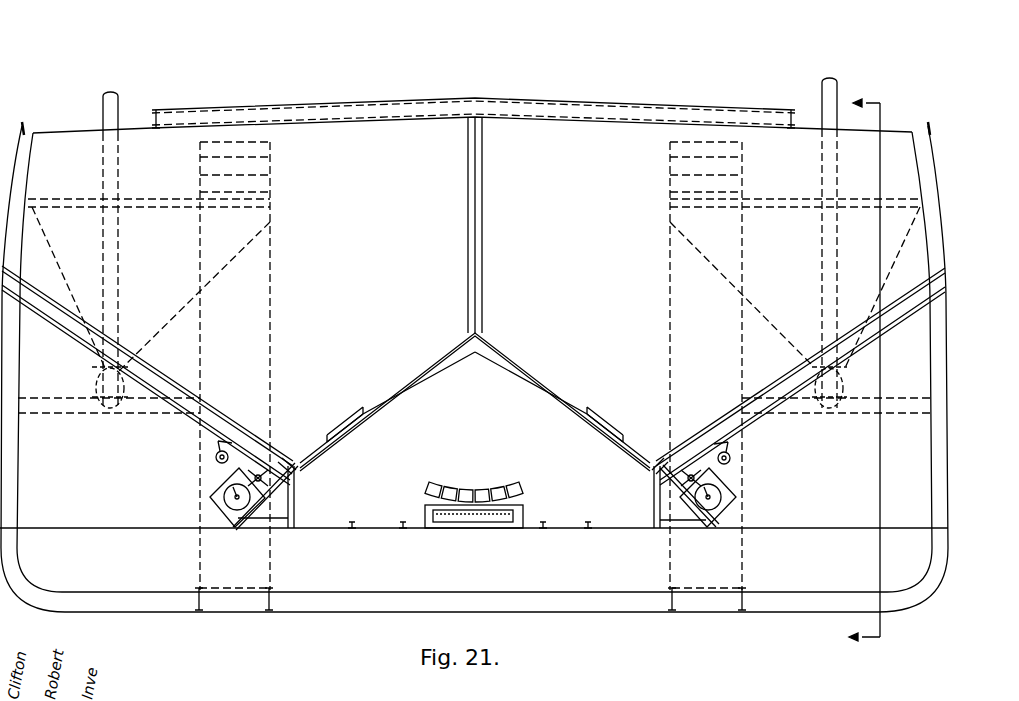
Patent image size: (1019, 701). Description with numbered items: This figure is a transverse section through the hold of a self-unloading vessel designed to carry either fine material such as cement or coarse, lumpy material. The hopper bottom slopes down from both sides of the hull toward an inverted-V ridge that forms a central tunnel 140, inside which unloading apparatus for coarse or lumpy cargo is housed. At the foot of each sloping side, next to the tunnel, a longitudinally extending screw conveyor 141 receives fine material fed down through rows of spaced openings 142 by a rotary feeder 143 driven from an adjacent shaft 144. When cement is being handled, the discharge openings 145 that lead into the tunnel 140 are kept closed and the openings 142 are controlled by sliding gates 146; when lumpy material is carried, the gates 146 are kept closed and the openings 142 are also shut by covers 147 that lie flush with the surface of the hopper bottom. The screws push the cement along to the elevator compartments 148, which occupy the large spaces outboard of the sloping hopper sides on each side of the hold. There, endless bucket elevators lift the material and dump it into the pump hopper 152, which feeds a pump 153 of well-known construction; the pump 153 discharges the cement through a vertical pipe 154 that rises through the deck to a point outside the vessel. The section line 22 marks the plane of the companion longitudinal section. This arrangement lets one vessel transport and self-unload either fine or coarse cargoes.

The section line 22- 22 is at (877, 377).
The central tunnel 140 is at (498, 388).
The screw conveyor 141 is at (722, 492).
The openings 142 is at (675, 455).
The rotary feeder 143 is at (673, 487).
The shaft 144 is at (727, 455).
The discharge opening 145 is at (630, 438).
The sliding gate 146 is at (703, 443).
The cover 147 is at (672, 460).
The elevator compartment 148 is at (433, 453).
The pump hopper 152 is at (695, 245).
The pump 153 is at (847, 382).
The pipe 154 is at (838, 97).